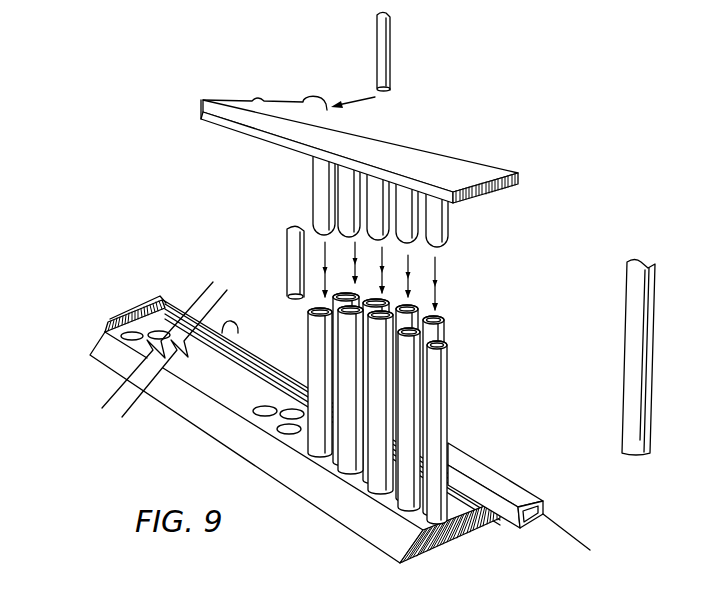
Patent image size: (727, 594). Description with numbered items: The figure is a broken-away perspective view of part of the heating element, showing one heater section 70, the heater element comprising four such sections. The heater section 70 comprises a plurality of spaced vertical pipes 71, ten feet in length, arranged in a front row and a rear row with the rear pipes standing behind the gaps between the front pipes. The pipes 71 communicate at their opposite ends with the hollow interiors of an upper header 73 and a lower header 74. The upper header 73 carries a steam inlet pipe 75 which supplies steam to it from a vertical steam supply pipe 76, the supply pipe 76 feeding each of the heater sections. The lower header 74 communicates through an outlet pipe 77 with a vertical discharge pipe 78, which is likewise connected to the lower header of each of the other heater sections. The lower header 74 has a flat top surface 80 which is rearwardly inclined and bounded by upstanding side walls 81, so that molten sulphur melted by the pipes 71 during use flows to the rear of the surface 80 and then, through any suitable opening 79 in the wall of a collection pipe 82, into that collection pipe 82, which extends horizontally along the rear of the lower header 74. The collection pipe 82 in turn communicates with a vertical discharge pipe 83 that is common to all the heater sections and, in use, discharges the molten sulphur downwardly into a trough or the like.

The heater section 70 is at (110, 236).
The vertical pipes 71 is at (445, 348).
The upper header 73 is at (497, 154).
The lower header 74 is at (195, 446).
The steam inlet pipe 75 is at (314, 99).
The vertical steam supply pipe 76 is at (383, 50).
The outlet pipe 77 is at (231, 320).
The vertical discharge pipe 78 is at (293, 281).
The opening 79 is at (466, 483).
The flat top surface 80 is at (243, 399).
The upstanding side walls 81 is at (130, 313).
The collection pipe 82 is at (520, 493).
The vertical discharge pipe 83 is at (636, 367).